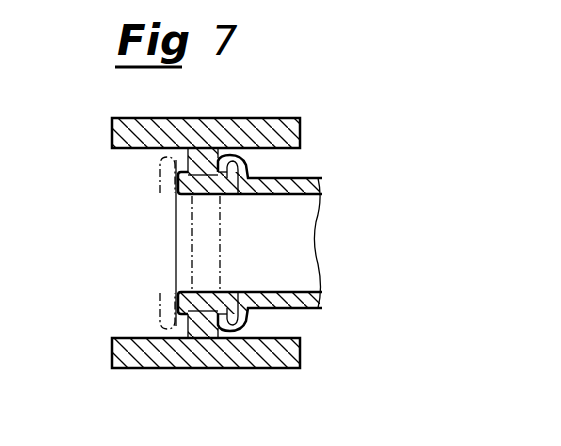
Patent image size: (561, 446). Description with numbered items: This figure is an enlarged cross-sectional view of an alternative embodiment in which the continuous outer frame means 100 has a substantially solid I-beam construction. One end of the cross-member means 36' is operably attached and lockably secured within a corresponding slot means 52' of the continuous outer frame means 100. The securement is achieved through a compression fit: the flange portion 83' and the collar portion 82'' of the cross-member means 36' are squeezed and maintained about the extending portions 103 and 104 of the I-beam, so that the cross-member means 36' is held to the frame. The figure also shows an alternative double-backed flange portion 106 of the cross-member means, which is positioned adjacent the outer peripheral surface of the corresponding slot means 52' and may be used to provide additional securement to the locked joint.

The continuous outer frame means 100 is at (108, 128).
The double-backed flange portion 106 is at (158, 172).
The flange portion 83' is at (223, 243).
The slot means 52' is at (168, 243).
The extending portion 103 is at (208, 196).
The extending portion 104 is at (210, 290).
The cross-member means 36' is at (285, 235).
The collar portion 82'' is at (299, 325).